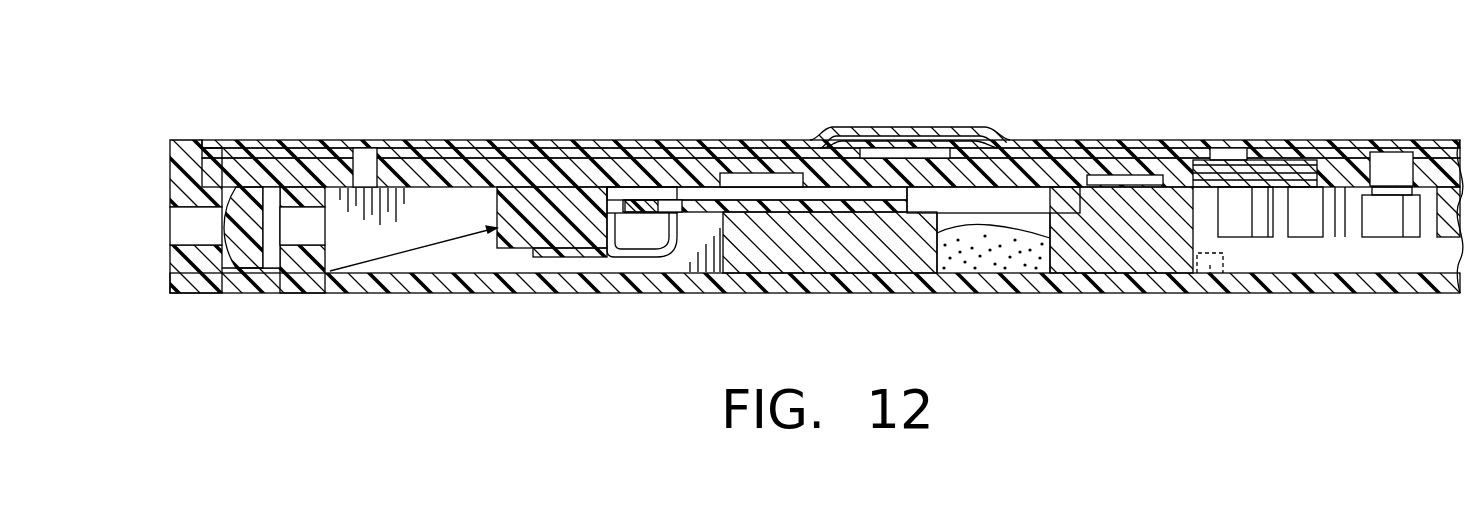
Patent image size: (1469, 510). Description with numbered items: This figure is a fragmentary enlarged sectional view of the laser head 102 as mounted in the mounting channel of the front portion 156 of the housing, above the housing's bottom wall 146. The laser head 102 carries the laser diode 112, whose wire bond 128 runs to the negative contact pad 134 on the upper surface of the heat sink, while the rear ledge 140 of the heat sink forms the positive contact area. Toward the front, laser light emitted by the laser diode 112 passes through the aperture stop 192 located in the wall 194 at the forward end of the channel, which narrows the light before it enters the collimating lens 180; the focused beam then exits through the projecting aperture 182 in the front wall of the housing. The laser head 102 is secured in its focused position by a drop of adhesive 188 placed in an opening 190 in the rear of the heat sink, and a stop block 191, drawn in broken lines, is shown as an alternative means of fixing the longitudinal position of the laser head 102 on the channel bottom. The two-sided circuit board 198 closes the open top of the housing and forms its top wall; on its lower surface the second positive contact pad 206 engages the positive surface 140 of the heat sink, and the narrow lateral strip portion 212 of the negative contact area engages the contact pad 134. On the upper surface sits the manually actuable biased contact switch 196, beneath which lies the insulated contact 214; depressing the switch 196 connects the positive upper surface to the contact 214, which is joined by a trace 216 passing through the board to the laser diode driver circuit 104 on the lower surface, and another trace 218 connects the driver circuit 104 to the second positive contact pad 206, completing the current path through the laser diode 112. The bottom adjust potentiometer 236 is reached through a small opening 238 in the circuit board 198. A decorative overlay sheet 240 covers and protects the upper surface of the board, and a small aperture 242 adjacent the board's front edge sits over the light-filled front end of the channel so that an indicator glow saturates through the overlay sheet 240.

The laser head 102 is at (740, 288).
The laser diode driver circuit 104 is at (1290, 258).
The laser diode 112 is at (517, 230).
The wire bond 128 is at (637, 255).
The contact pad 134 is at (700, 193).
The rear ledge 140 is at (1157, 243).
The bottom wall 146 is at (1140, 292).
The front portion 156 is at (376, 292).
The collimating lens 180 is at (243, 260).
The projecting aperture 182 is at (178, 210).
The adhesive 188 is at (993, 260).
The opening 190 is at (947, 230).
The stop block 191 is at (1205, 292).
The aperture stop 192 is at (303, 227).
The wall 194 is at (306, 200).
The contact switch 196 is at (905, 128).
The circuit board 198 is at (526, 168).
The second positive contact pad 206 is at (1140, 175).
The narrow lateral strip portion 212 is at (772, 178).
The contact 214 is at (1045, 153).
The trace 216 is at (1252, 170).
The trace 218 is at (1198, 190).
The potentiometer 236 is at (1395, 220).
The opening 238 is at (1390, 160).
The overlay sheet 240 is at (985, 137).
The aperture 242 is at (407, 157).